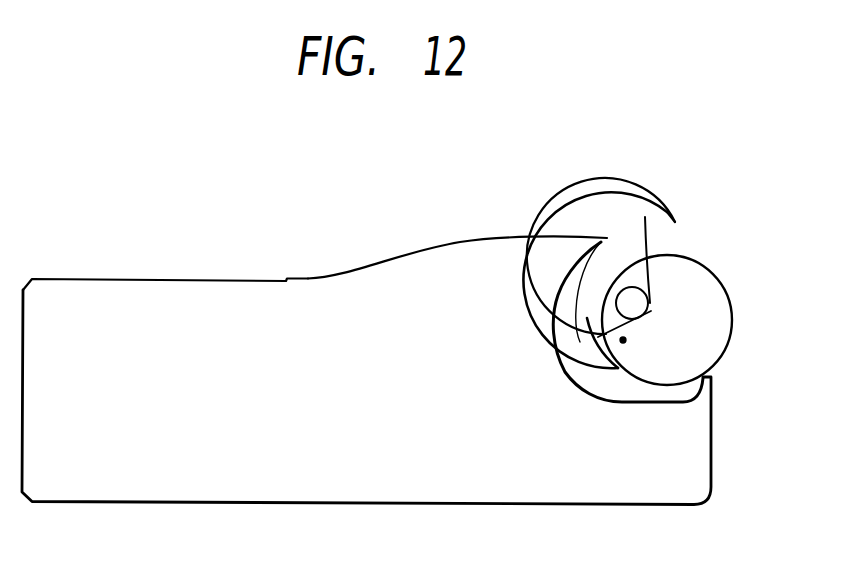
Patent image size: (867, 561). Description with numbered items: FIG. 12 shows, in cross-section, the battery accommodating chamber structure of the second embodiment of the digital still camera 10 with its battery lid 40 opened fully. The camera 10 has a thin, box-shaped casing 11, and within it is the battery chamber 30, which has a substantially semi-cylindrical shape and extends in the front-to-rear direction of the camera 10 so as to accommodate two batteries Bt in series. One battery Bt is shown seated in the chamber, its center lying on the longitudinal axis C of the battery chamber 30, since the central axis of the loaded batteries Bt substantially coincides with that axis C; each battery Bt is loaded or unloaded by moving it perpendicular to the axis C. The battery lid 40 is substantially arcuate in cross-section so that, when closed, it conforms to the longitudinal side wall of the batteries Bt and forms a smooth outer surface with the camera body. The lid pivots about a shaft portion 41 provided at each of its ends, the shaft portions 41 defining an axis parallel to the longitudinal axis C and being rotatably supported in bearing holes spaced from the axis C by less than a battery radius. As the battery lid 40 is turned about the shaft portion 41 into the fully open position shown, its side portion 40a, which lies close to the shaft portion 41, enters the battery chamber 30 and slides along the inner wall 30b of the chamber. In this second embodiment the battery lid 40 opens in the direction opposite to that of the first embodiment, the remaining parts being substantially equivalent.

The digital still camera 10 is at (113, 198).
The casing 11 is at (220, 292).
The battery chamber 30 is at (609, 383).
The inner wall of the battery chamber 30b is at (566, 305).
The battery lid 40 is at (643, 207).
The side portion of the battery lid 40a is at (585, 340).
The shaft portion 41 is at (630, 302).
The battery Bt is at (690, 280).
The longitudinal axis of the battery chamber C is at (626, 340).